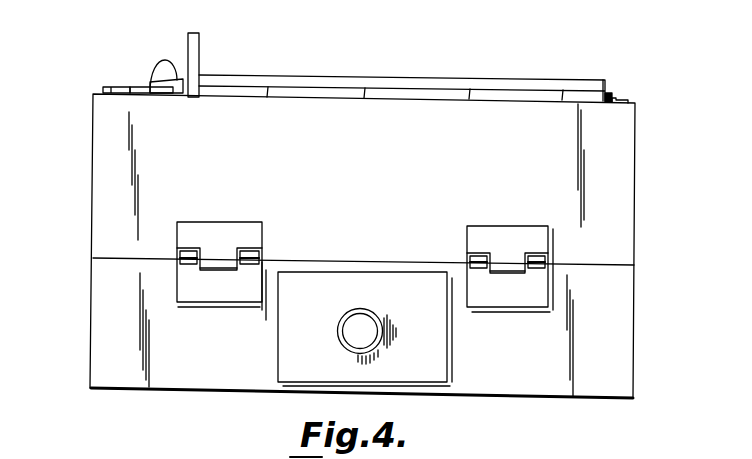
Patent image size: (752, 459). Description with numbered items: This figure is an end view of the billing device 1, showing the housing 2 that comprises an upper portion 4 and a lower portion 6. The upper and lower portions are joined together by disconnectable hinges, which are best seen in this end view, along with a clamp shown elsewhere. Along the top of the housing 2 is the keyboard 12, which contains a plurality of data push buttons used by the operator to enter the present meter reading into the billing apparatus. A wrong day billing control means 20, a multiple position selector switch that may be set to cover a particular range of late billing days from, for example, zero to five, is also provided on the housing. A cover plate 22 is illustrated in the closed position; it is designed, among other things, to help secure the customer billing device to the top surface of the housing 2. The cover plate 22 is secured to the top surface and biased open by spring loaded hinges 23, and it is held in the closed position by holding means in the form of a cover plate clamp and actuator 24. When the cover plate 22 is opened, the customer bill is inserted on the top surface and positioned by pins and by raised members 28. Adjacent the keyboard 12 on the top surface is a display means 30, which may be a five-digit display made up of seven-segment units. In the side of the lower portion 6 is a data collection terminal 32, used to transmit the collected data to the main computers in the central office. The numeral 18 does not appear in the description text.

The billing device 1 is at (612, 80).
The housing 2 is at (91, 137).
The upper portion 4 is at (620, 177).
The lower portion 6 is at (613, 308).
The keyboard 12 is at (114, 81).
The base plate 18 is at (143, 93).
The wrong day billing control means 20 is at (163, 70).
The cover plate 22 is at (467, 80).
The spring loaded hinges 23 is at (620, 98).
The cover plate clamp and actuator 24 is at (199, 48).
The raised members 28 is at (295, 92).
The display means 30 is at (182, 78).
The data collection terminal 32 is at (363, 310).